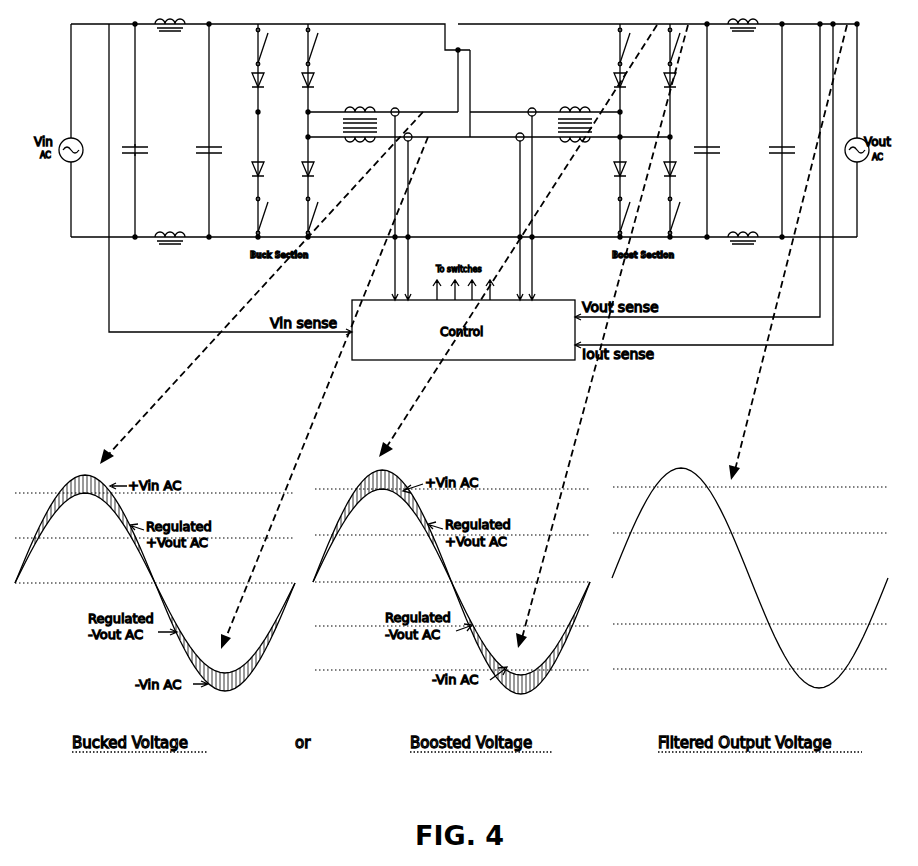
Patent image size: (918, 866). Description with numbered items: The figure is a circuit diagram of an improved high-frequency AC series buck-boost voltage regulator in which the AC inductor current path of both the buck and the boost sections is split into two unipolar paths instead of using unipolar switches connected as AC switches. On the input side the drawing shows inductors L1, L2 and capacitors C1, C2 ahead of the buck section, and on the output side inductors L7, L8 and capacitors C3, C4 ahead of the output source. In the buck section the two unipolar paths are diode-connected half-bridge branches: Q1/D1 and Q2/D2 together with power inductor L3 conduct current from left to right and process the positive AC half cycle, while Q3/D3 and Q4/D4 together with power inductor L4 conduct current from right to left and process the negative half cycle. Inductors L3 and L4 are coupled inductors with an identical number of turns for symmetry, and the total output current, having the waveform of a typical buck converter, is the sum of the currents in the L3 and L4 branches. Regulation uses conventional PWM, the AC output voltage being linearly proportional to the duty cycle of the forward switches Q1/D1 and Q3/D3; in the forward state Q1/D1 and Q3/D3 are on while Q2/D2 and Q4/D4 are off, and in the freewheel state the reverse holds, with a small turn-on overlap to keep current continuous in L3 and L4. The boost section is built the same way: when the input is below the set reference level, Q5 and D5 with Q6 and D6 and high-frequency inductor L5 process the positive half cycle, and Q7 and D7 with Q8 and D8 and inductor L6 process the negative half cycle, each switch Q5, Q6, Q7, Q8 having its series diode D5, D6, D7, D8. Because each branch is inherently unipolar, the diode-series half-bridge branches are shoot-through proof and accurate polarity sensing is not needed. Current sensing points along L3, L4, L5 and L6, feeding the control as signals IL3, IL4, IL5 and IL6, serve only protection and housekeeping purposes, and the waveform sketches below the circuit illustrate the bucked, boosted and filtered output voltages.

The input filter inductor L1 is at (170, 35).
The input filter inductor L2 is at (170, 230).
The input filter capacitor C1 is at (144, 151).
The input filter capacitor C2 is at (197, 151).
The unipolar semiconductor switching device Q1 is at (251, 47).
The unipolar semiconductor switching device Q2 is at (251, 216).
The unipolar semiconductor switching device Q3 is at (301, 47).
The unipolar semiconductor switching device Q4 is at (301, 216).
The series diode D1 is at (246, 82).
The series diode D2 is at (246, 171).
The series diode D3 is at (298, 82).
The series diode D4 is at (298, 171).
The power inductor L3 is at (360, 108).
The power inductor L4 is at (360, 145).
The power inductor L5 is at (575, 108).
The power inductor L6 is at (575, 145).
The unipolar semiconductor switching device Q5 is at (613, 47).
The unipolar semiconductor switching device Q6 is at (613, 216).
The unipolar semiconductor switching device Q7 is at (663, 47).
The unipolar semiconductor switching device Q8 is at (683, 216).
The series diode D5 is at (608, 82).
The series diode D6 is at (610, 171).
The series diode D7 is at (658, 82).
The series diode D8 is at (681, 171).
The output filter inductor L7 is at (743, 35).
The output filter inductor L8 is at (743, 230).
The output filter capacitor C3 is at (716, 151).
The output filter capacitor C4 is at (771, 151).
The inductor L3 current sense IL3 is at (383, 204).
The inductor L4 current sense IL4 is at (417, 216).
The inductor L5 current sense IL5 is at (543, 204).
The inductor L6 current sense IL6 is at (510, 216).